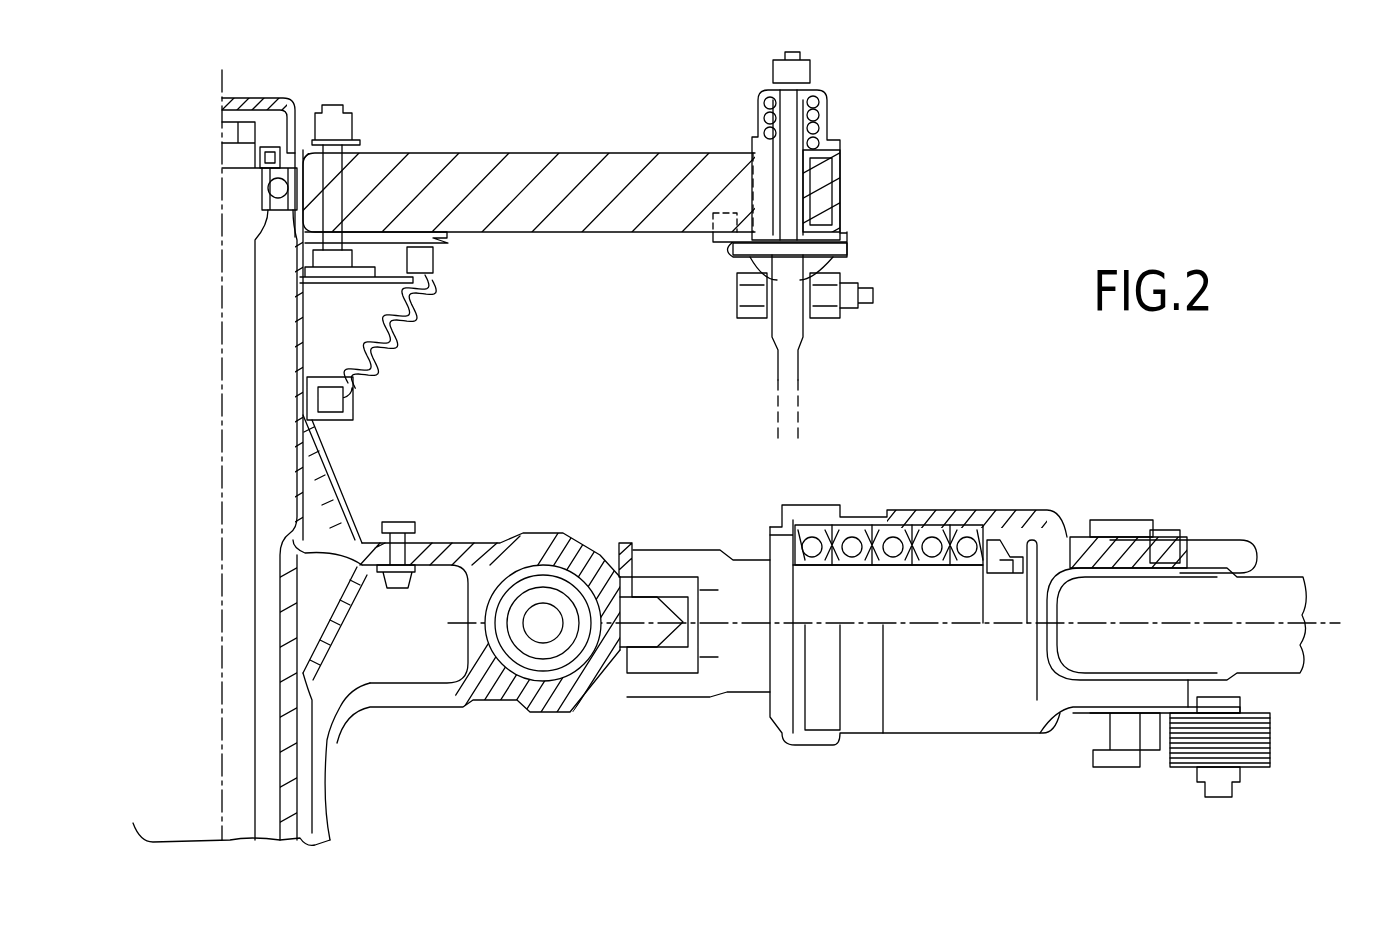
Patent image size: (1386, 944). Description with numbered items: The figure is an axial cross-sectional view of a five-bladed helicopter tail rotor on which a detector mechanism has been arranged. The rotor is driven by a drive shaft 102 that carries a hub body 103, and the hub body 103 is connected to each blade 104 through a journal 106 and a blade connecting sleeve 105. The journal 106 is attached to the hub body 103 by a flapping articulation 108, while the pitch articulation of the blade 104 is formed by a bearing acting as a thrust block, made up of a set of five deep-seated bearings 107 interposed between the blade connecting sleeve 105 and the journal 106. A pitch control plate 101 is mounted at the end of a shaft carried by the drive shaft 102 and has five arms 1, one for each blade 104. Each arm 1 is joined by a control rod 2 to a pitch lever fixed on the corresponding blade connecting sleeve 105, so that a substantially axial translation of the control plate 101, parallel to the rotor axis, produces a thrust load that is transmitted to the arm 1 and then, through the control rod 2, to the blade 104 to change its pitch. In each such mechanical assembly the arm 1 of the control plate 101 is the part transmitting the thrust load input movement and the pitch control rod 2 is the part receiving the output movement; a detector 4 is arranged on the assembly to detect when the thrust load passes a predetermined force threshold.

The arm 1 is at (472, 165).
The control rod 2 is at (793, 357).
The detector 4 is at (752, 127).
The pitch control plate 101 is at (387, 167).
The drive shaft 102 is at (340, 747).
The hub body 103 is at (432, 543).
The blade 104 is at (1278, 597).
The blade connecting sleeve 105 is at (933, 720).
The journal 106 is at (694, 690).
The deep-seated bearings 107 is at (933, 540).
The flapping articulation 108 is at (560, 597).